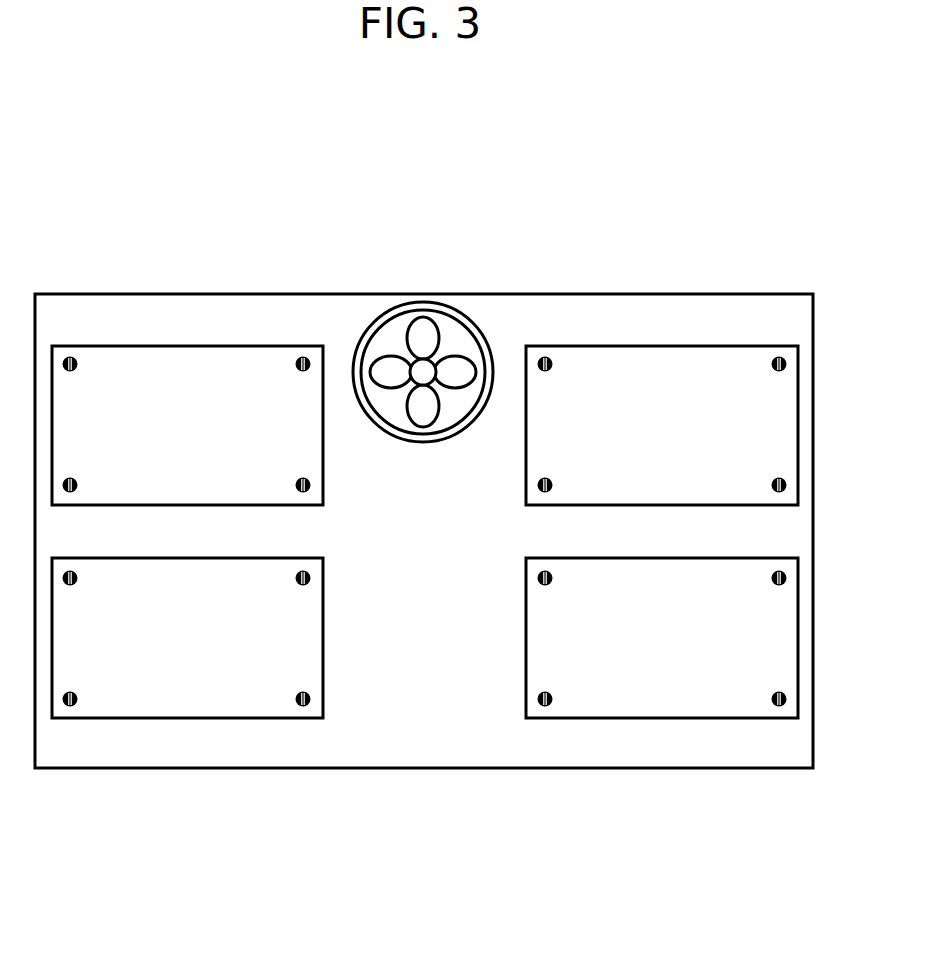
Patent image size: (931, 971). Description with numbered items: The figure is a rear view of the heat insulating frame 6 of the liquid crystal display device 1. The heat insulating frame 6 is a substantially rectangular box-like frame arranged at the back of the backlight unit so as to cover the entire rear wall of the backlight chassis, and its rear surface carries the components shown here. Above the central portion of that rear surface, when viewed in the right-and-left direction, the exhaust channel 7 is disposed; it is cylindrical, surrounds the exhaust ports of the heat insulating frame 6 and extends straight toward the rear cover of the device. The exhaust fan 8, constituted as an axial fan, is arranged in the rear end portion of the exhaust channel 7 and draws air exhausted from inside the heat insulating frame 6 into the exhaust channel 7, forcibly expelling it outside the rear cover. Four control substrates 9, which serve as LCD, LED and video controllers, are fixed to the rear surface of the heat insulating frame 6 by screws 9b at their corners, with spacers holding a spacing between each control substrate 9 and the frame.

The liquid crystal display device 1 is at (113, 146).
The heat insulating frame 6 is at (632, 294).
The exhaust channel 7 is at (377, 312).
The exhaust fan 8 is at (457, 353).
The control substrate 9 is at (236, 345).
The screws 9b is at (70, 356).